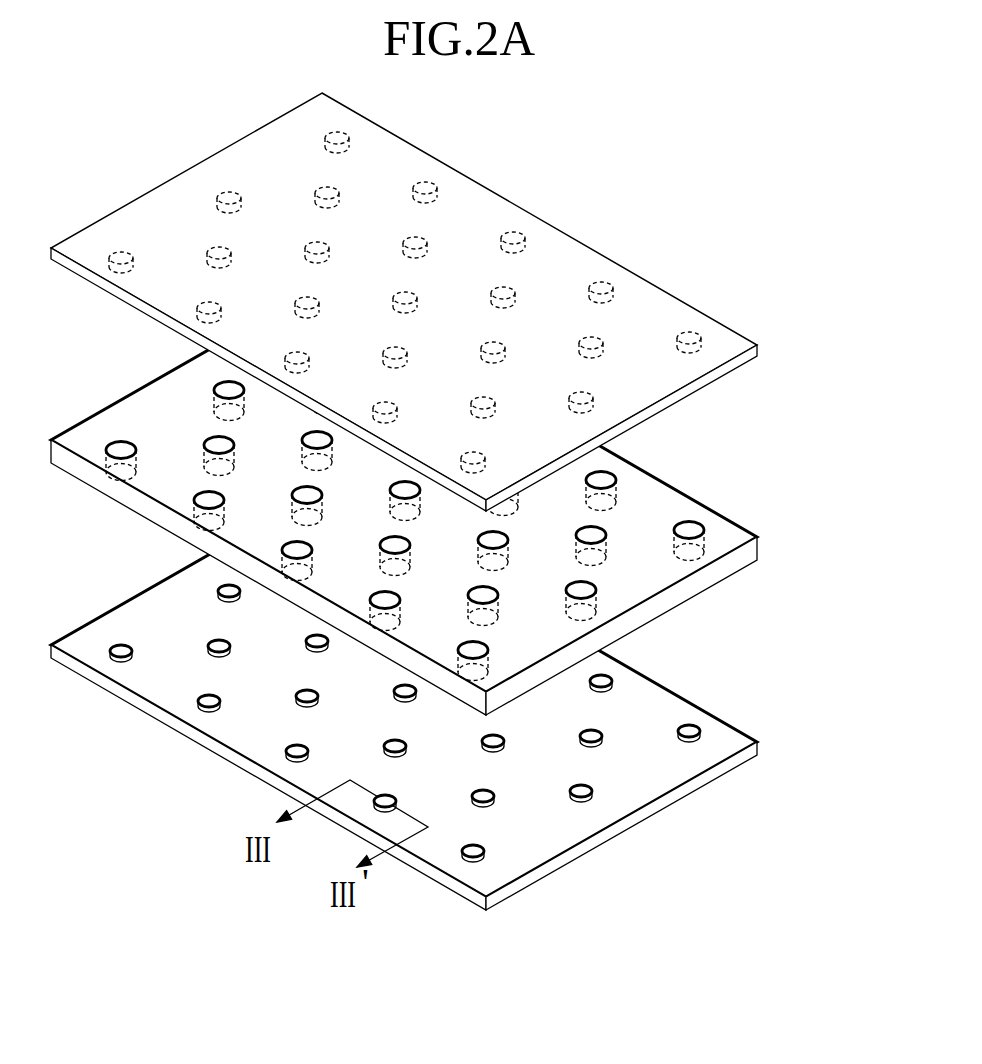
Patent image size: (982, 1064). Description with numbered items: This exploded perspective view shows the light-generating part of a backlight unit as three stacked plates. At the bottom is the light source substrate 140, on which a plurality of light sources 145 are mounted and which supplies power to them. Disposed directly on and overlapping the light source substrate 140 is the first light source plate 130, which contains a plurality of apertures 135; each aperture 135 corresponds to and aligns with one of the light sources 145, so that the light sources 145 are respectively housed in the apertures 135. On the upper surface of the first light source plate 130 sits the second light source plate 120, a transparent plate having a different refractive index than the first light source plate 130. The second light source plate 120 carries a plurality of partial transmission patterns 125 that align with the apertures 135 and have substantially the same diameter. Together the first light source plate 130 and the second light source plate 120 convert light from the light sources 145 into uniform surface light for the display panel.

The second light source plate 120 is at (718, 339).
The partial transmission pattern 125 is at (593, 393).
The first light source plate 130 is at (748, 553).
The aperture 135 is at (702, 523).
The light source substrate 140 is at (728, 737).
The light source 145 is at (484, 848).